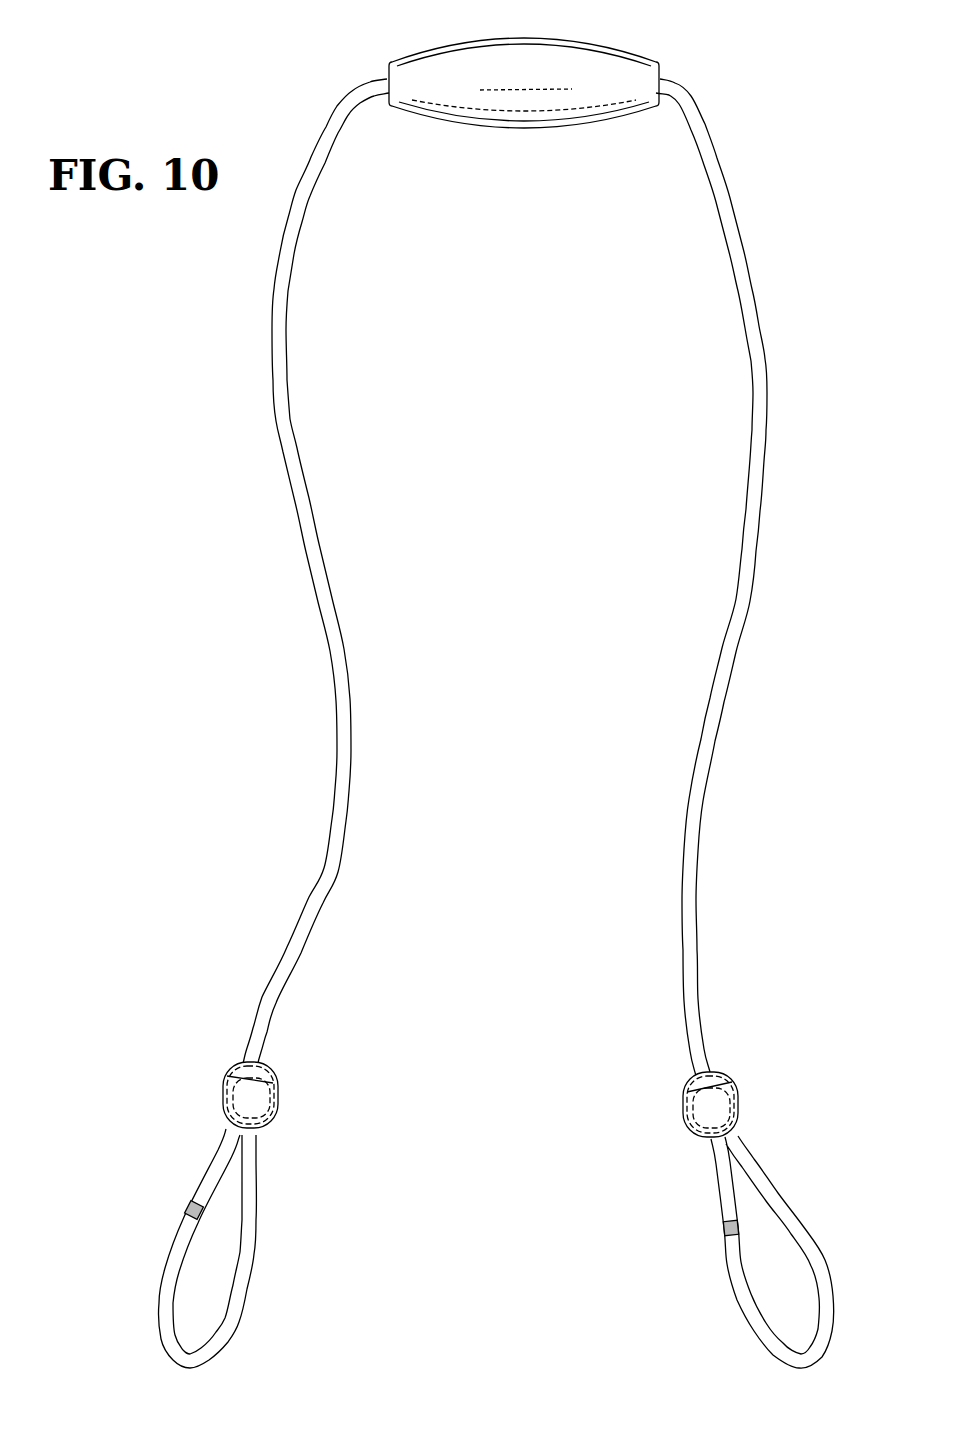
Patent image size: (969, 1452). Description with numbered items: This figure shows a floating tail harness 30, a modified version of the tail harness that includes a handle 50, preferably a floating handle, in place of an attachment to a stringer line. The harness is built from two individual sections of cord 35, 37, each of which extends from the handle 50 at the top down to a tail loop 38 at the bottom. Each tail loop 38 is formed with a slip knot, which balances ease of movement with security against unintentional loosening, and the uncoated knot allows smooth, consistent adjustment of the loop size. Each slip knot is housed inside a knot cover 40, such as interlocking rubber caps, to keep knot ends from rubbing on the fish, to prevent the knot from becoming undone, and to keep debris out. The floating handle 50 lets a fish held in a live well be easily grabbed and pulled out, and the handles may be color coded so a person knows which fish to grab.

The tail harness 30 is at (801, 341).
The floating handle 50 is at (585, 62).
The cord 35 is at (752, 553).
The cord 37 is at (325, 607).
The tail loops 38 is at (245, 1280).
The knot covers 40 is at (718, 1104).